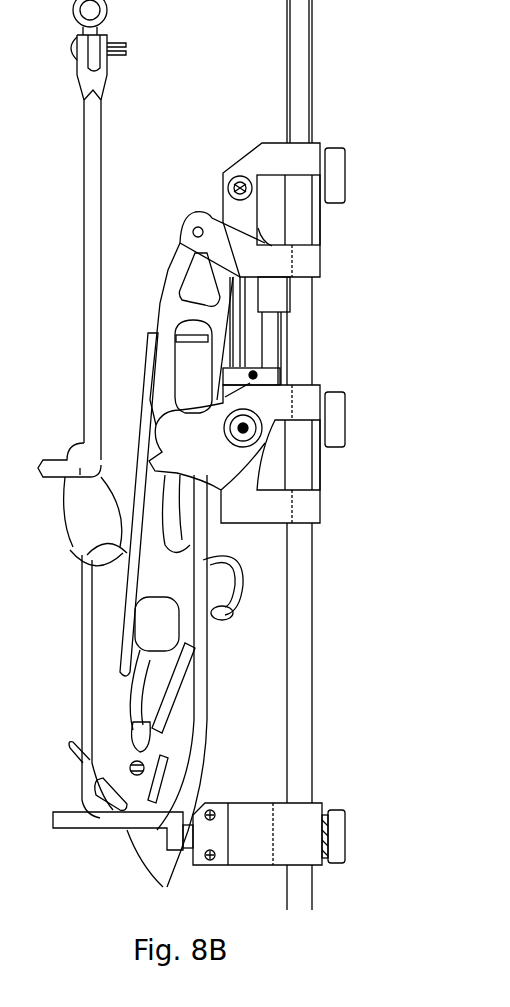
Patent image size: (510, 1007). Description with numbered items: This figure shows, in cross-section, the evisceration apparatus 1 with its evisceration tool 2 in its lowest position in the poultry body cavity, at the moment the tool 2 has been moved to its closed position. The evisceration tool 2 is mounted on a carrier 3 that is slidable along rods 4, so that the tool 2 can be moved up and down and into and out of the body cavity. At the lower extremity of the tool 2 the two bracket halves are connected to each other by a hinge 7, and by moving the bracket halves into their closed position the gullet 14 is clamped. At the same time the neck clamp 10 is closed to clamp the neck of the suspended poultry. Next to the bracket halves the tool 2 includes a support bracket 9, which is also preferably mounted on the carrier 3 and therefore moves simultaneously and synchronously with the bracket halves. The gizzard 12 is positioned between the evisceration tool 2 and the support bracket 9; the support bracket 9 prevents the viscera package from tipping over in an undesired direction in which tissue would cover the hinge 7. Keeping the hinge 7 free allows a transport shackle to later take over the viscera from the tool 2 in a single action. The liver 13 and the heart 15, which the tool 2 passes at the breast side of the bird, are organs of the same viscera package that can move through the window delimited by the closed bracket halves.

The evisceration apparatus 1 is at (348, 332).
The evisceration tool 2 is at (200, 592).
The carrier 3 is at (160, 350).
The rods 4 is at (314, 540).
The hinge 7 is at (123, 765).
The support bracket 9 is at (120, 613).
The neck clamp 10 is at (97, 823).
The gizzard 12 is at (157, 623).
The liver 13 is at (170, 683).
The gullet 14 is at (150, 778).
The heart 15 is at (137, 735).